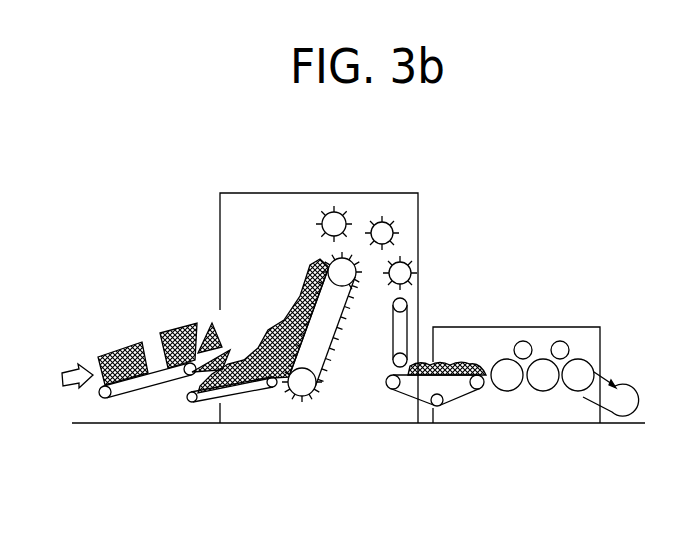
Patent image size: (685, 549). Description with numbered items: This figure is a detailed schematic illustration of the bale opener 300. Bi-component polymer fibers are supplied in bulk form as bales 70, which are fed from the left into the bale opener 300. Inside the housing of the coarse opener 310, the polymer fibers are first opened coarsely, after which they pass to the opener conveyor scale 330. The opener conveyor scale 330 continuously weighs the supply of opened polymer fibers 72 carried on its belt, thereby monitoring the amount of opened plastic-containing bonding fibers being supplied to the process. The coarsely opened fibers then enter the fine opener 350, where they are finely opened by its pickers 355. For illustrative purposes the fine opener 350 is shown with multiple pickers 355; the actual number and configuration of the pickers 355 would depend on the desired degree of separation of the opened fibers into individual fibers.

The bale opener 300 is at (447, 152).
The coarse opener 310 is at (242, 193).
The bales 70 is at (178, 325).
The opened polymer fibers 72 is at (462, 364).
The opener conveyor scale 330 is at (412, 397).
The fine opener 350 is at (541, 327).
The pickers 355 is at (579, 342).